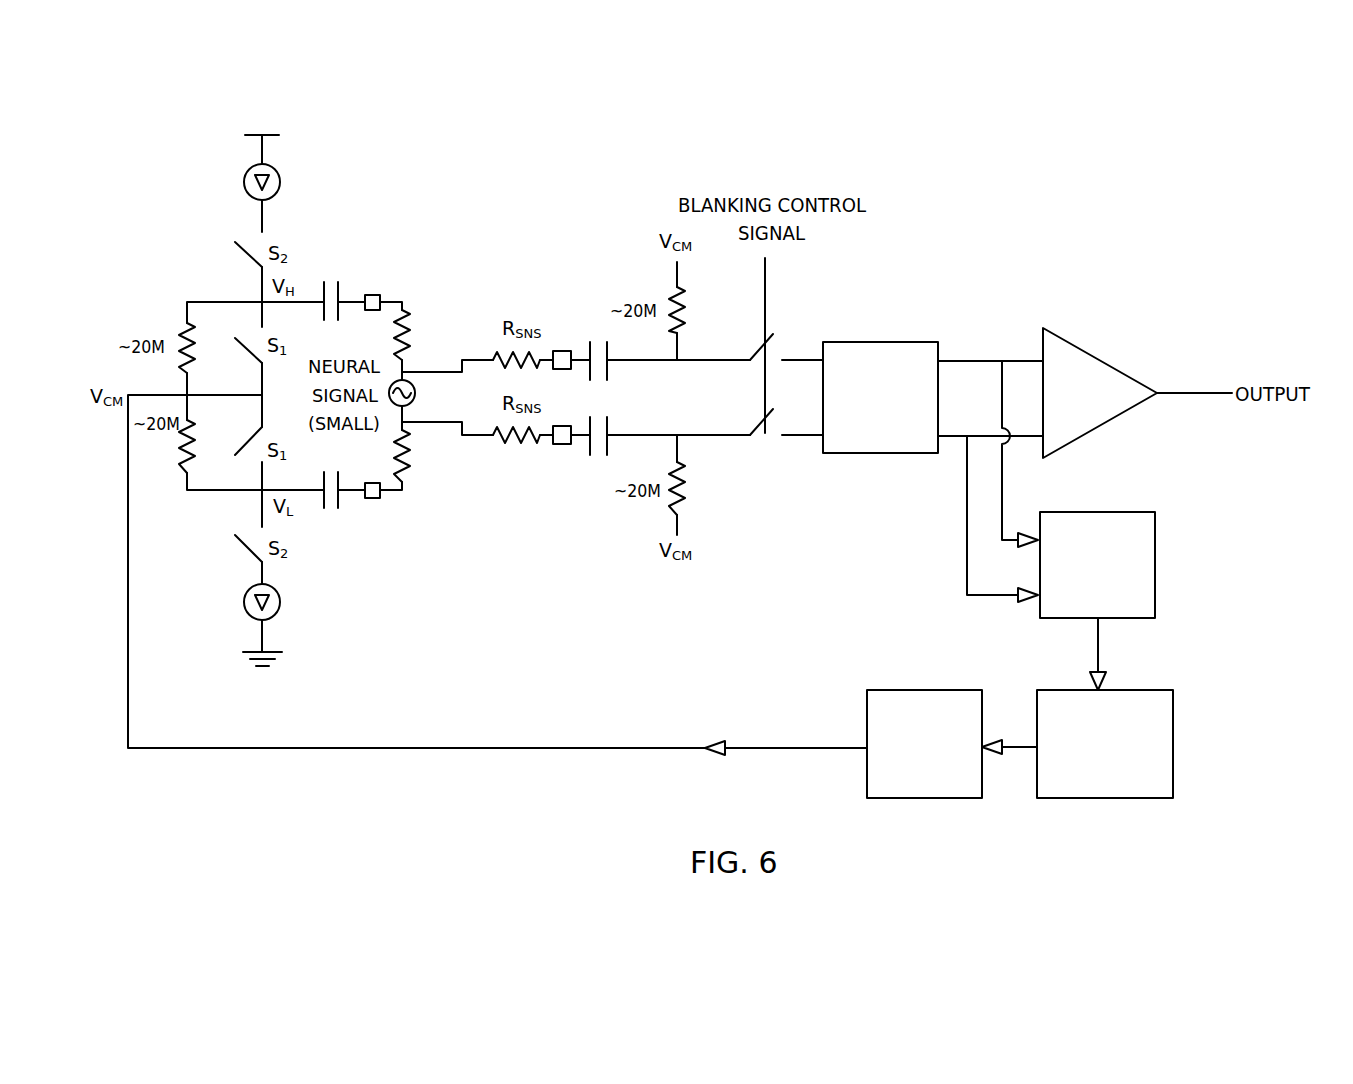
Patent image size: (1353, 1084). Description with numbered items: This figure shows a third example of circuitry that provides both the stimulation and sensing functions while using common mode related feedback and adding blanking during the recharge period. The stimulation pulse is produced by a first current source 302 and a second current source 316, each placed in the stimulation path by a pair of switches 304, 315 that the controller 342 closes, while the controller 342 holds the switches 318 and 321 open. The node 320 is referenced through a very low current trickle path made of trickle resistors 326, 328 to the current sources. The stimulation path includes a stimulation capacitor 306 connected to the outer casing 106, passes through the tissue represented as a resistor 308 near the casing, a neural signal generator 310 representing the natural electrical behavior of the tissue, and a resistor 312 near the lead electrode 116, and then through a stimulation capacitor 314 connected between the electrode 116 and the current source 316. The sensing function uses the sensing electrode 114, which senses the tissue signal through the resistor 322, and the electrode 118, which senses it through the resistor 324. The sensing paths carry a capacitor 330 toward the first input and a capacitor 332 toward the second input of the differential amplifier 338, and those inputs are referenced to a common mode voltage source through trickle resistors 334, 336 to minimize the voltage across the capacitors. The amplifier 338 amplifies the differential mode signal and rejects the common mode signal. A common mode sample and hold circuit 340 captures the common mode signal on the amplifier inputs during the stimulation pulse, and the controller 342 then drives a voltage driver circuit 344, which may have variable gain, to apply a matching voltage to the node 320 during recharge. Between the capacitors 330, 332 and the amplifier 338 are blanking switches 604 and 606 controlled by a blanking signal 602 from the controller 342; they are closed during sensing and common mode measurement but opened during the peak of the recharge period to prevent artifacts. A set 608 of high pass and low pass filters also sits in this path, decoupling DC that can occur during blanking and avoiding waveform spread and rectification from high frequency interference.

The first current source 302 is at (275, 170).
The switch 304 is at (270, 237).
The stimulation capacitor 306 is at (326, 258).
The outer casing 106 is at (378, 272).
The resistor 308 is at (410, 323).
The neural signal generator 310 is at (413, 405).
The resistor 312 is at (406, 484).
The stimulation capacitor 314 is at (333, 543).
The lead electrode 116 is at (385, 527).
The switch 315 is at (292, 550).
The second current source 316 is at (279, 612).
The switch 318 is at (245, 327).
The node 320 is at (263, 410).
The switch 321 is at (250, 458).
The resistor 322 is at (496, 352).
The resistor 324 is at (514, 447).
The trickle resistor 326 is at (183, 327).
The trickle resistor 328 is at (178, 470).
The capacitor 330 is at (590, 317).
The capacitor 332 is at (599, 460).
The trickle resistor 334 is at (686, 306).
The trickle resistor 336 is at (689, 487).
The sensing electrode 114 is at (562, 330).
The electrode 118 is at (562, 472).
The differential amplifier 338 is at (1097, 350).
The common mode sample and hold circuit 340 is at (1127, 618).
The controller 342 is at (1105, 798).
The voltage driver circuit 344 is at (910, 798).
The blanking signal 602 is at (768, 262).
The blanking switch 604 is at (778, 346).
The blanking switch 606 is at (760, 441).
The set of high pass and low pass filters 608 is at (880, 342).